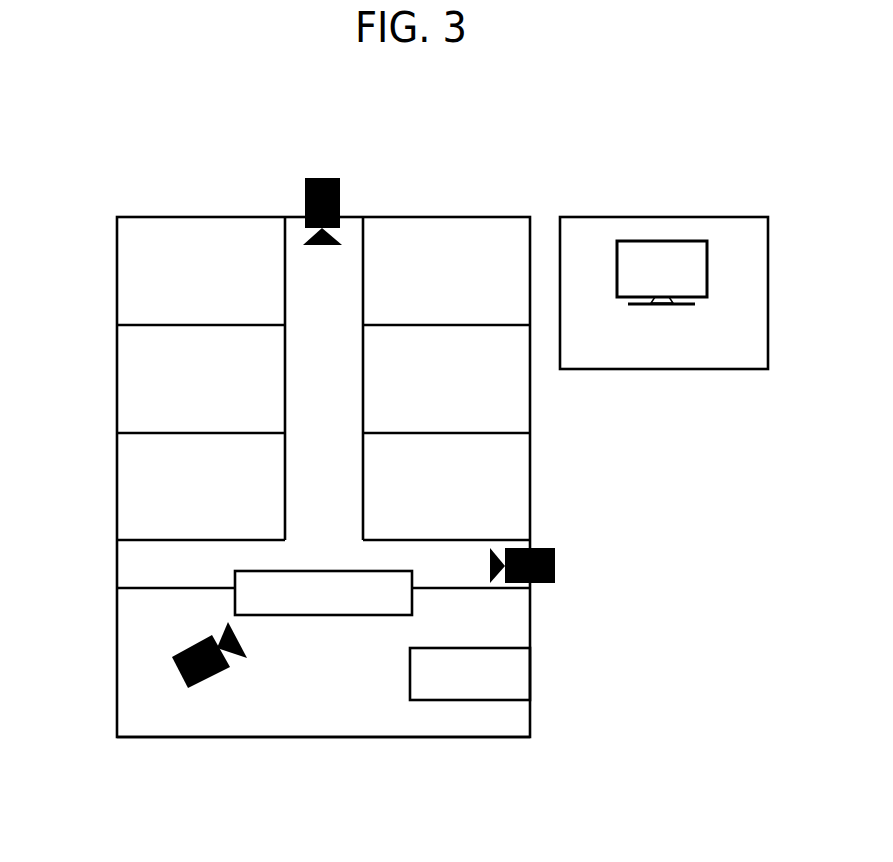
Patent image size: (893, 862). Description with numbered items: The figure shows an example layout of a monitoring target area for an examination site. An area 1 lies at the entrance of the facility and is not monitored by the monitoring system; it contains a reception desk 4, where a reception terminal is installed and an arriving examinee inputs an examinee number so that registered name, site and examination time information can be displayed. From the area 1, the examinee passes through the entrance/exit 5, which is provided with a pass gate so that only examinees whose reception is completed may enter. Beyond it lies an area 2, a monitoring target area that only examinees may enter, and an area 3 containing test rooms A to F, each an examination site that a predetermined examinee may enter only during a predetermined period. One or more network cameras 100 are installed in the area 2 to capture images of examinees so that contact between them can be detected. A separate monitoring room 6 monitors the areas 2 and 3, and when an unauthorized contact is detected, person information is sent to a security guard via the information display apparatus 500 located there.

The area 1 is at (117, 614).
The area 2 is at (117, 560).
The area 3 is at (117, 273).
The reception desk 4 is at (531, 661).
The entrance/exit 5 is at (349, 617).
The monitoring room 6 is at (712, 370).
The network camera 100 is at (320, 178).
The information display apparatus 500 is at (657, 239).